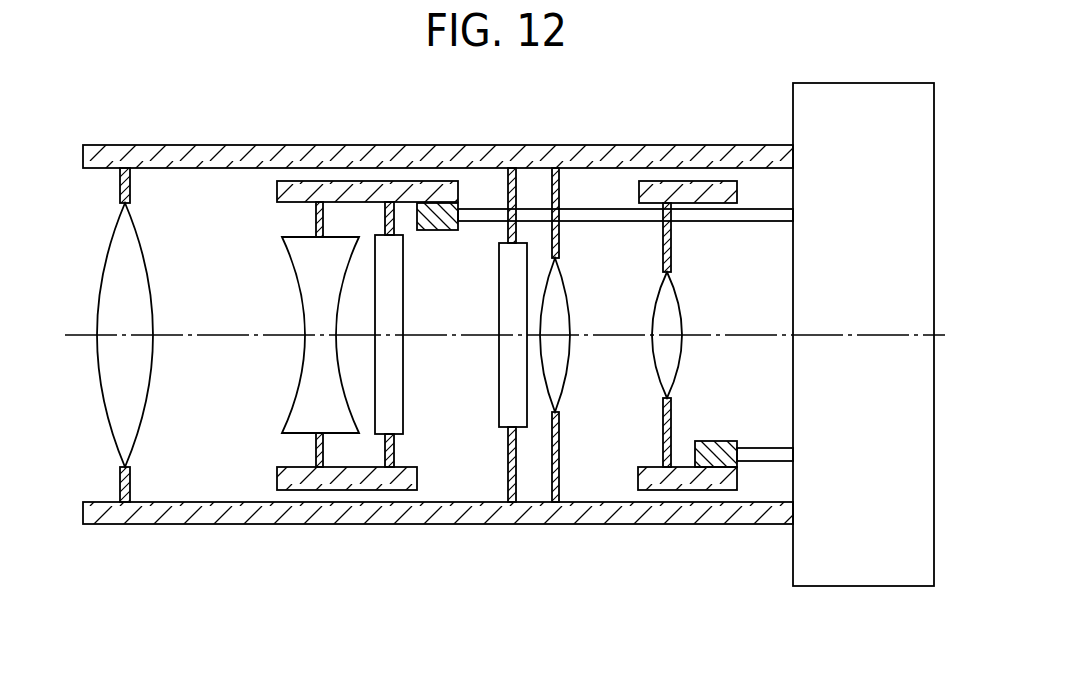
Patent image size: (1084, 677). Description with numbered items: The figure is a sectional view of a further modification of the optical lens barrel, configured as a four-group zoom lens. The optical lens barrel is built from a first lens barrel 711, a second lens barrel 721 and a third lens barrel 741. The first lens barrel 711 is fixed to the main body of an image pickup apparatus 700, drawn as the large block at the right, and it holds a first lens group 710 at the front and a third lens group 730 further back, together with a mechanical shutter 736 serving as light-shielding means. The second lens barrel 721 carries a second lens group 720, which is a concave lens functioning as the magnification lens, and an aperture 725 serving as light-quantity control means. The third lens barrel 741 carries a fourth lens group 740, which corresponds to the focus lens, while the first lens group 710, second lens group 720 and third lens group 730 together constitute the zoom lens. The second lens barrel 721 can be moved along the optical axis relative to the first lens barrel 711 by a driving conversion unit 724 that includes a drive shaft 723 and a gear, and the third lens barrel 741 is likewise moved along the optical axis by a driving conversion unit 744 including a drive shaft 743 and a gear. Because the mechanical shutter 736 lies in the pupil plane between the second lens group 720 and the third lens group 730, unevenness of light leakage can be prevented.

The image pickup apparatus 700 is at (838, 578).
The first lens group 710 is at (137, 418).
The first lens barrel 711 is at (180, 150).
The second lens group 720 is at (307, 376).
The second lens barrel 721 is at (320, 188).
The drive shaft 723 is at (480, 225).
The driving conversion unit 724 is at (429, 232).
The aperture 725 is at (403, 393).
The third lens group 730 is at (566, 361).
The mechanical shutter 736 is at (521, 417).
The fourth lens group 740 is at (679, 362).
The third lens barrel 741 is at (673, 190).
The drive shaft 743 is at (762, 448).
The driving conversion unit 744 is at (704, 440).